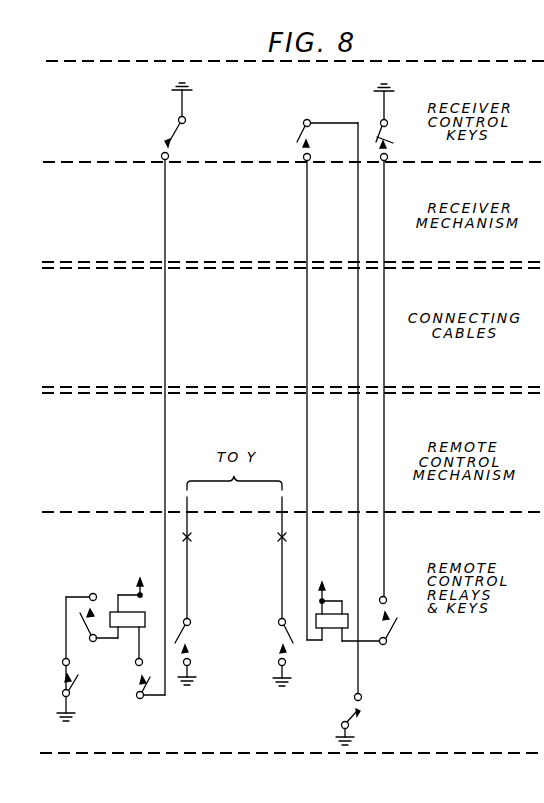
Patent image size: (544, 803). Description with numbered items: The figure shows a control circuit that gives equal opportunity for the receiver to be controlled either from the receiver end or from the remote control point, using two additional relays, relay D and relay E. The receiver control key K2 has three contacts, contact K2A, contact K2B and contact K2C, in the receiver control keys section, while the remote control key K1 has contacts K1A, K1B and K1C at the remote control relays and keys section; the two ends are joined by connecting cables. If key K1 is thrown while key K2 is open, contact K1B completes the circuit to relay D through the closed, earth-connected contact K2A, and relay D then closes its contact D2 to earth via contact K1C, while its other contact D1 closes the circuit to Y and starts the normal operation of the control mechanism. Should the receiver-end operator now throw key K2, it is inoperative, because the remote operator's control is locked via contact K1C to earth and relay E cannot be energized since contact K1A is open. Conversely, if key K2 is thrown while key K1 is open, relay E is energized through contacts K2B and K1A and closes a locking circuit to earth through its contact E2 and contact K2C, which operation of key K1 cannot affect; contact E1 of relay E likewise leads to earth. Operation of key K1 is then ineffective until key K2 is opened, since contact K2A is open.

The contact K2A of control key K2 K2A is at (184, 389).
The contact K2B of control key K2 K2B is at (308, 380).
The contact K2C of control key K2 K2C is at (400, 342).
The contact K1A of control key K1 K1A is at (364, 434).
The contact K1B of control key K1 K1B is at (138, 685).
The contact K1C of control key K1 K1C is at (78, 690).
The relay D is at (127, 620).
The relay contact D1 is at (195, 652).
The relay contact D2 is at (92, 628).
The relay E is at (343, 611).
The relay contact E1 is at (276, 653).
The relay contact E2 is at (398, 622).